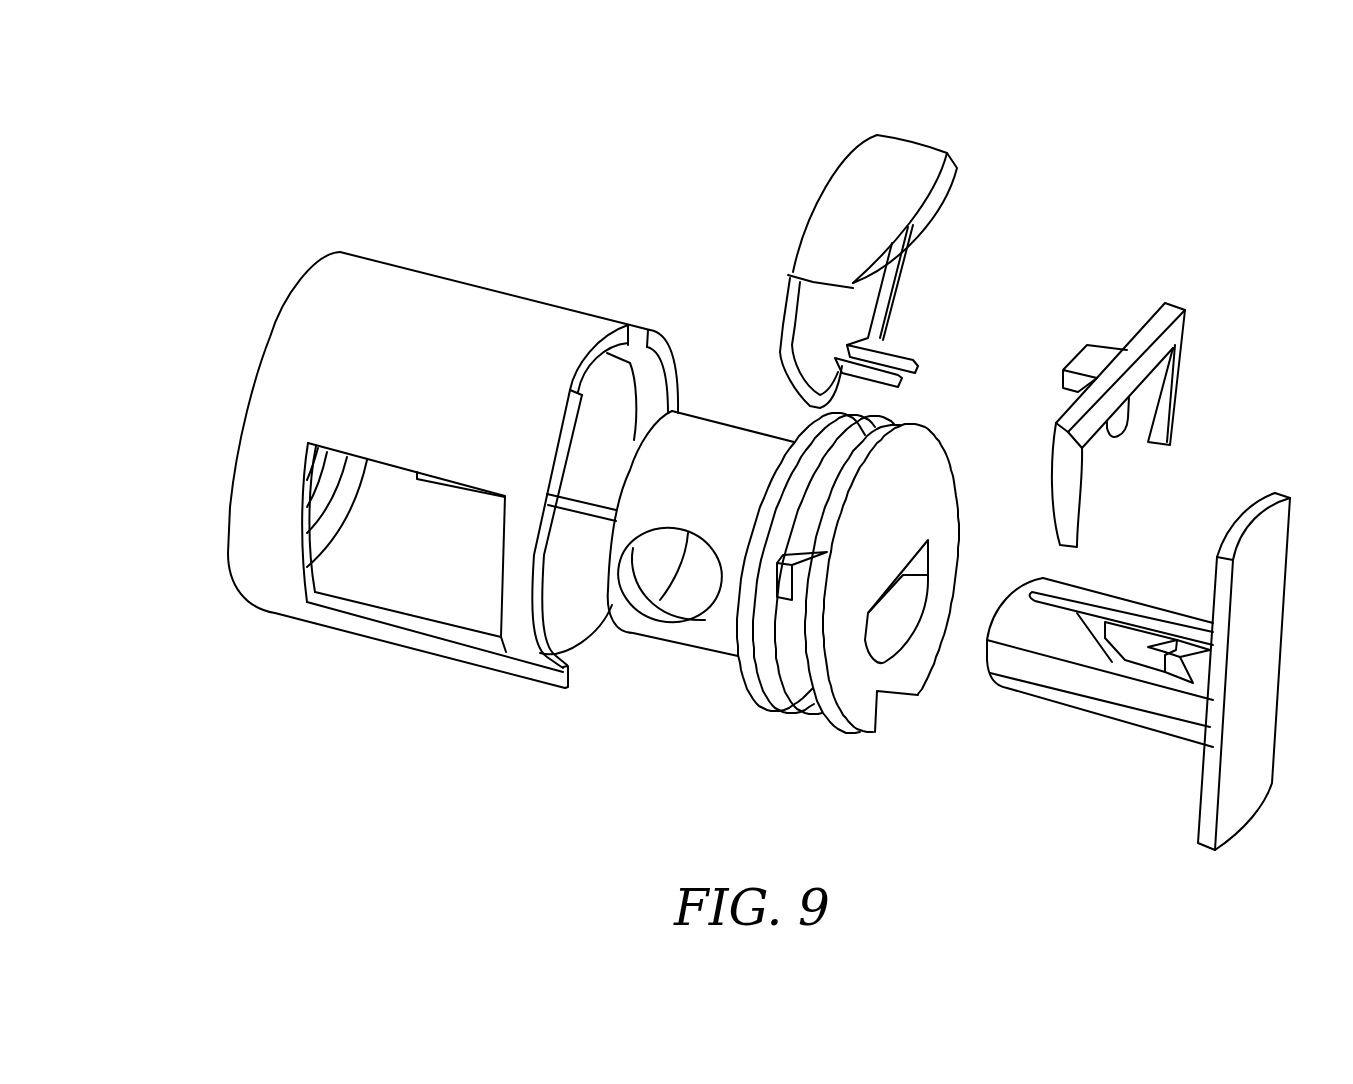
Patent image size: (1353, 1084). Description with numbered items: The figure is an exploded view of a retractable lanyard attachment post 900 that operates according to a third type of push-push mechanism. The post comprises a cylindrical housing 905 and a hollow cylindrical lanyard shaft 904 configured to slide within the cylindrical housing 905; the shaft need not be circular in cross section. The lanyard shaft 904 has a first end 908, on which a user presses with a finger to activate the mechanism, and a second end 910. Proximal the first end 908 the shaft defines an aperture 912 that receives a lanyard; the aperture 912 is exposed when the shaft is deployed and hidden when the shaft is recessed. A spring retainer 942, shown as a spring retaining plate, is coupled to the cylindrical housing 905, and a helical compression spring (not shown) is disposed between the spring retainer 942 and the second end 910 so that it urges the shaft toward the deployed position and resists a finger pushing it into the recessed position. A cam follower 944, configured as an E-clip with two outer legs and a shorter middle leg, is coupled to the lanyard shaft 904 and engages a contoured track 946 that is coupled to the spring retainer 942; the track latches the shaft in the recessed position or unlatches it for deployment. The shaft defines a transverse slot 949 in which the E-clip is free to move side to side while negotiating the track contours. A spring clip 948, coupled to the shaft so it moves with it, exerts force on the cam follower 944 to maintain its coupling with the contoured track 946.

The retractable lanyard attachment post 900 is at (183, 143).
The cylindrical housing 905 is at (269, 337).
The first end 908 is at (647, 417).
The cylindrical lanyard shaft 904 is at (736, 424).
The aperture 912 is at (680, 583).
The transverse slot 949 is at (802, 622).
The second end 910 is at (858, 735).
The spring clip 948 is at (822, 196).
The cam follower 944 is at (1187, 337).
The contoured track 946 is at (1144, 620).
The spring retainer 942 is at (1200, 798).